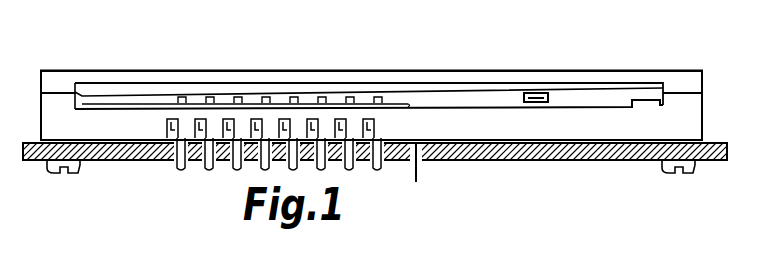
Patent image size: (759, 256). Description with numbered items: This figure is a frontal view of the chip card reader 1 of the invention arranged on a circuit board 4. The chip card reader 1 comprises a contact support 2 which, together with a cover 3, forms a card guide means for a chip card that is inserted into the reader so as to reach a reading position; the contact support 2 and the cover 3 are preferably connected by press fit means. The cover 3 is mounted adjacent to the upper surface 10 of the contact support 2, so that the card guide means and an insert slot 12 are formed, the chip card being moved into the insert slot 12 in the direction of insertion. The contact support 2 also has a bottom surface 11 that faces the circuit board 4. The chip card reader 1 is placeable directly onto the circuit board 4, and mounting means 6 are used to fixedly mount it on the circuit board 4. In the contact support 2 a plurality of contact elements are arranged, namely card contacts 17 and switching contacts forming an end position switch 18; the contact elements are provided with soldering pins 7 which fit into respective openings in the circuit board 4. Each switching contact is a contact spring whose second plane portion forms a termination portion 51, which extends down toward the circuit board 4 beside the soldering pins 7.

The chip card reader 1 is at (660, 60).
The contact support 2 is at (598, 125).
The cover 3 is at (563, 74).
The circuit board 4 is at (128, 160).
The mounting means 6 is at (76, 163).
The soldering pins 7 is at (240, 167).
The upper surface 10 is at (58, 92).
The bottom surface 11 is at (513, 161).
The insert slot 12 is at (120, 97).
The card contacts 17 is at (322, 97).
The end position switch 18 is at (548, 113).
The termination portion 51 is at (419, 170).